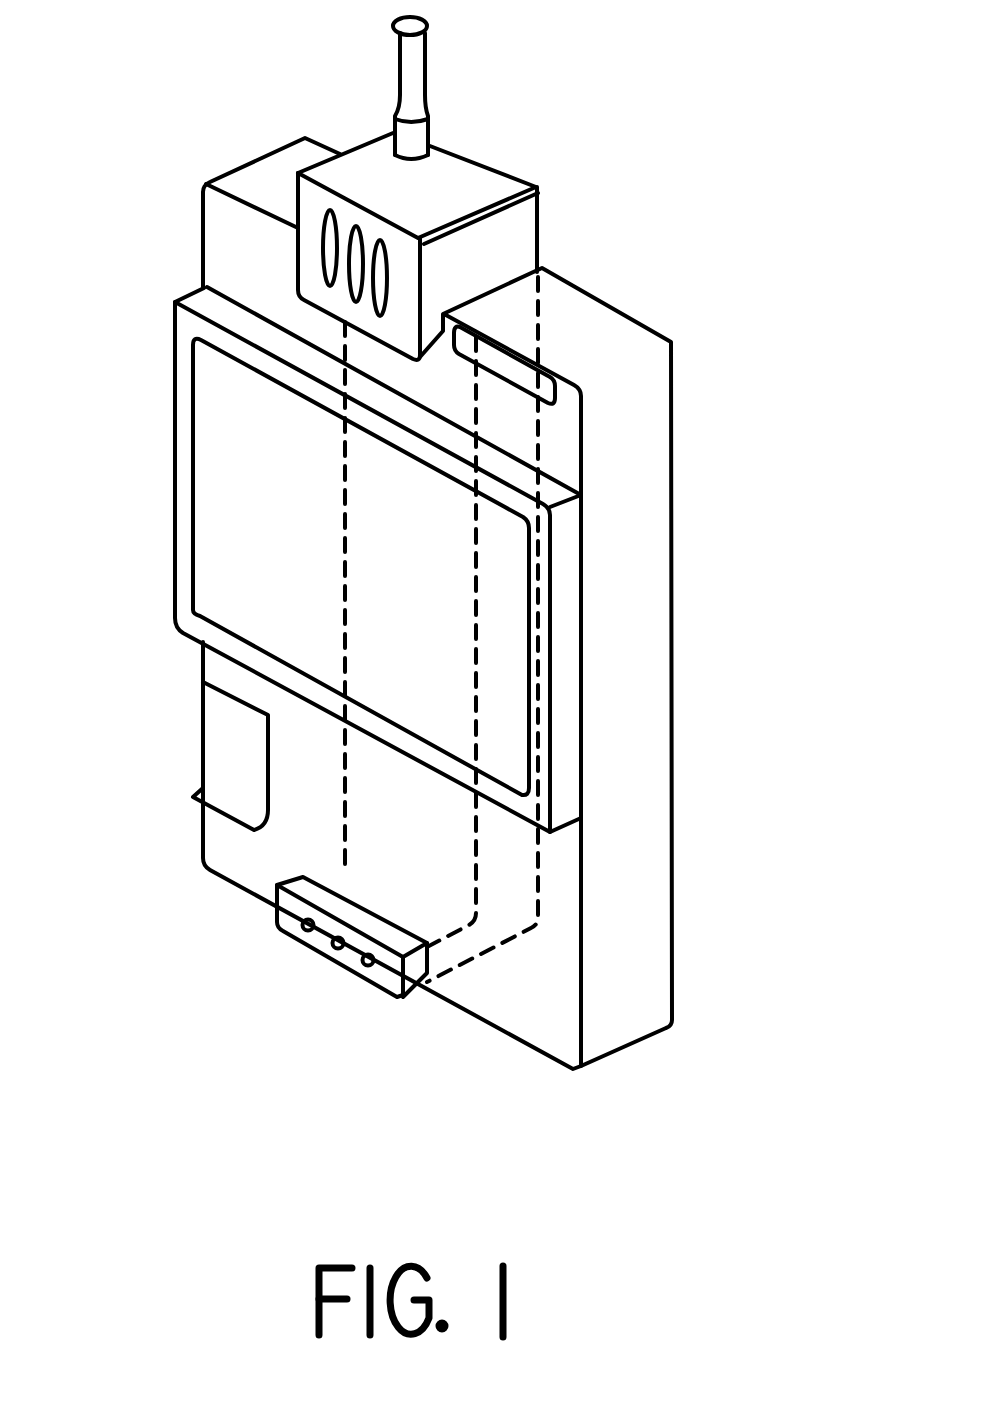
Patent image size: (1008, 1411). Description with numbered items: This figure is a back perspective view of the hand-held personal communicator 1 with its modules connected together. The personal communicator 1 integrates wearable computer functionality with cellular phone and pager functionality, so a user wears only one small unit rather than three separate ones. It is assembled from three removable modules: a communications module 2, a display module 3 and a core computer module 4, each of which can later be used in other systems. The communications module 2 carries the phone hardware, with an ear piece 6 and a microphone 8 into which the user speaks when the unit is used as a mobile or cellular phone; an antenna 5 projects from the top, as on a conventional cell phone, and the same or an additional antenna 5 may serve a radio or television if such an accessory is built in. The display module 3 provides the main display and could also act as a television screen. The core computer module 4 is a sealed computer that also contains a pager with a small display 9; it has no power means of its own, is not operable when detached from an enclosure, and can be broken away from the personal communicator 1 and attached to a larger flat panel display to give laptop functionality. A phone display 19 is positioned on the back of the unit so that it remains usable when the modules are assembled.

The personal communicator 1 is at (447, 575).
The communications module 2 is at (415, 209).
The display module 3 is at (233, 543).
The core computer module 4 is at (674, 662).
The antenna 5 is at (410, 54).
The ear piece 6 is at (313, 197).
The microphone 8 is at (352, 960).
The small display 9 is at (552, 385).
The phone display 19 is at (223, 732).